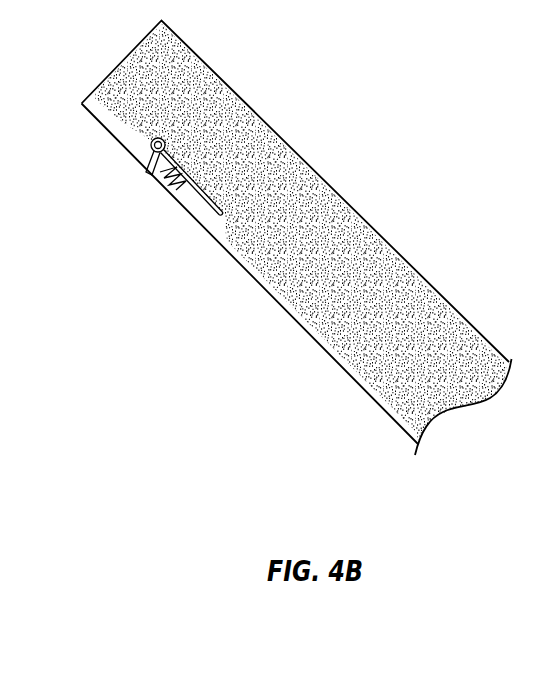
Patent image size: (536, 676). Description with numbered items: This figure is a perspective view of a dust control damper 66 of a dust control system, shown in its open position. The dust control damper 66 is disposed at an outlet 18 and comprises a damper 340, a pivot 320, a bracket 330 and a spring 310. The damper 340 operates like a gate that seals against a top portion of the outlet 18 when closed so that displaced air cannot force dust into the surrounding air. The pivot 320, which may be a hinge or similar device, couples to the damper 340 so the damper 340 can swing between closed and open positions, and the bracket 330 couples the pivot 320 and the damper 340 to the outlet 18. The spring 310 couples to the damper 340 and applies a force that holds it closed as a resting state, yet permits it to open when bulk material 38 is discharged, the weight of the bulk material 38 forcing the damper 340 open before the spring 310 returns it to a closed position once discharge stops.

The outlet 18 is at (381, 241).
The bulk material 38 is at (312, 322).
The dust control damper 66 is at (109, 227).
The spring 310 is at (167, 192).
The pivot 320 is at (150, 143).
The bracket 330 is at (147, 161).
The damper 340 is at (199, 199).